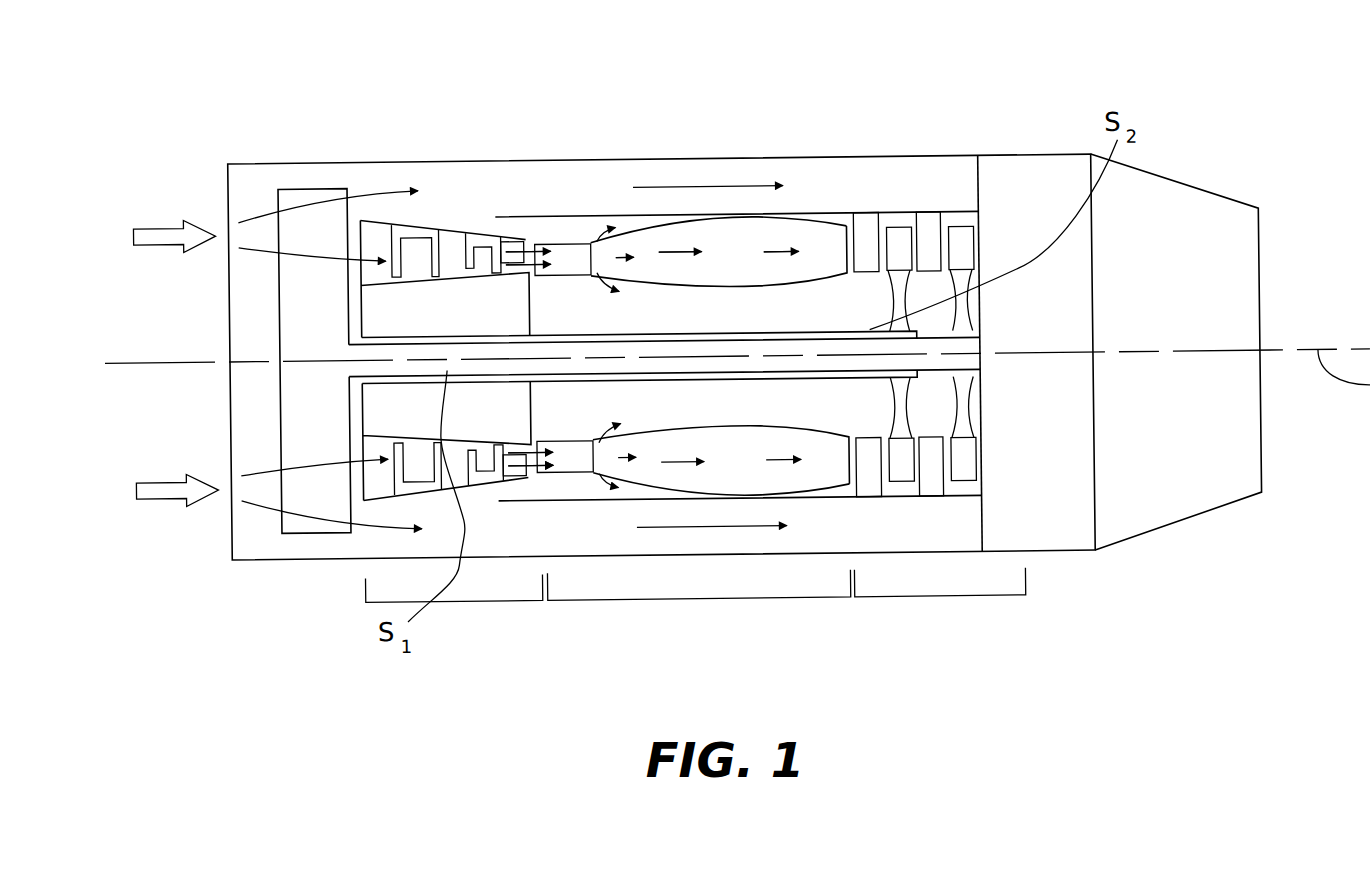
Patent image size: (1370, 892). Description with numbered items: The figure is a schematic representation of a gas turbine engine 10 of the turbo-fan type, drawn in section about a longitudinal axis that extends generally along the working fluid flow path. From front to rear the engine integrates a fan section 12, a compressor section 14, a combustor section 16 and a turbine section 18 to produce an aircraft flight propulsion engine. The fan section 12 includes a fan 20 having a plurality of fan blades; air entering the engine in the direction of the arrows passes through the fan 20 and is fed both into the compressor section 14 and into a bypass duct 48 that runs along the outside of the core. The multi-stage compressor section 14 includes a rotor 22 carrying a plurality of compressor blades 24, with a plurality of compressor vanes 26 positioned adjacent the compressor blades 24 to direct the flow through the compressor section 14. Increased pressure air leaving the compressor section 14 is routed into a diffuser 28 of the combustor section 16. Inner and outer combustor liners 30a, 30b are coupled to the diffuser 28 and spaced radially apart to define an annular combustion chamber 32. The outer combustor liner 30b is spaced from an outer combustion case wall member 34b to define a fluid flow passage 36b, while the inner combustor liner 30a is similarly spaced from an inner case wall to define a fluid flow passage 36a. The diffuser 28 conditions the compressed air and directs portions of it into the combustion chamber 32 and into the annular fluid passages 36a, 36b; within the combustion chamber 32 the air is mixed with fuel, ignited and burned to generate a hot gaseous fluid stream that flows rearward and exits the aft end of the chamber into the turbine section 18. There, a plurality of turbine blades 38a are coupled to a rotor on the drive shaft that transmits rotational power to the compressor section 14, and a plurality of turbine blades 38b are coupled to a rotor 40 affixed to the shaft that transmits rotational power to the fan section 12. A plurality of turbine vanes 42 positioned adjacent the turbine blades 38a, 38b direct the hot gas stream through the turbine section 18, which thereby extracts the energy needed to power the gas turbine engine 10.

The gas turbine engine 10 is at (937, 84).
The fan section 12 is at (303, 542).
The compressor section 14 is at (450, 616).
The combustor section 16 is at (568, 619).
The turbine section 18 is at (1000, 607).
The fan 20 is at (280, 404).
The rotor 22 is at (387, 325).
The compressor blades 24 is at (455, 246).
The compressor vanes 26 is at (377, 234).
The diffuser 28 is at (568, 254).
The inner combustor liner 30a is at (800, 290).
The outer combustor liner 30b is at (668, 228).
The combustion chamber 32 is at (713, 273).
The outer combustion case wall member 34b is at (740, 196).
The fluid flow passage 36a is at (728, 328).
The fluid flow passage 36b is at (643, 230).
The turbine blades 38a is at (905, 478).
The turbine blades 38b is at (970, 478).
The turbine rotor 40 is at (903, 421).
The turbine vanes 42 is at (928, 226).
The bypass duct 48 is at (497, 203).